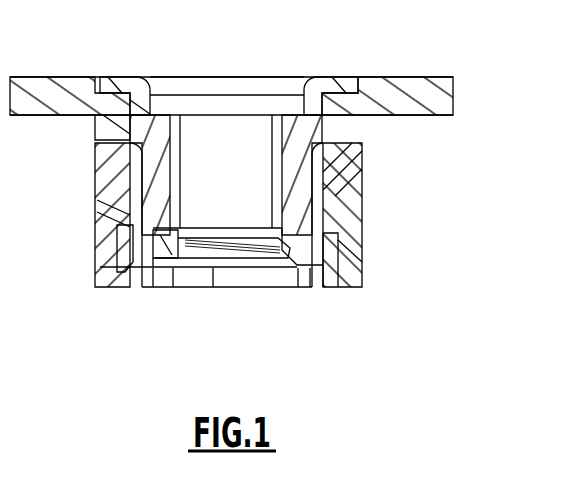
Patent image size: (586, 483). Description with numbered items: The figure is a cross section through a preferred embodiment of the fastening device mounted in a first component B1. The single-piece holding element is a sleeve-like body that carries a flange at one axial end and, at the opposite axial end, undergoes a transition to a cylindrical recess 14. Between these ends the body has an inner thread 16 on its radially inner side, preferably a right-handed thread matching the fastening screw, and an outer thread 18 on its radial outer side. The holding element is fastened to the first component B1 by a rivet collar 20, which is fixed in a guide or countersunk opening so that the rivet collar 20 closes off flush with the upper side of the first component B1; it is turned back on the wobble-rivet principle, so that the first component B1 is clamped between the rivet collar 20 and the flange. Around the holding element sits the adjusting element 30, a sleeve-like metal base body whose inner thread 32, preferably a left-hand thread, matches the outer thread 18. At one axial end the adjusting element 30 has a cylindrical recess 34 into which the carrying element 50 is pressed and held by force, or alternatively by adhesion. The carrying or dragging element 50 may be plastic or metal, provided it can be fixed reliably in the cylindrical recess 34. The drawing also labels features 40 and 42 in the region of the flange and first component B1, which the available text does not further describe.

The first component B1 is at (443, 93).
The rivet collar 20 is at (123, 83).
The seal ring 40 is at (298, 130).
The leg of plate 42 is at (103, 128).
The inner thread 16 is at (272, 163).
The outer thread 18 is at (122, 215).
The adjusting element 30 is at (342, 198).
The inner thread 32 is at (344, 163).
The cylindrical recess 34 is at (338, 250).
The cylindrical recess 14 is at (163, 242).
The carrying element 50 is at (262, 275).